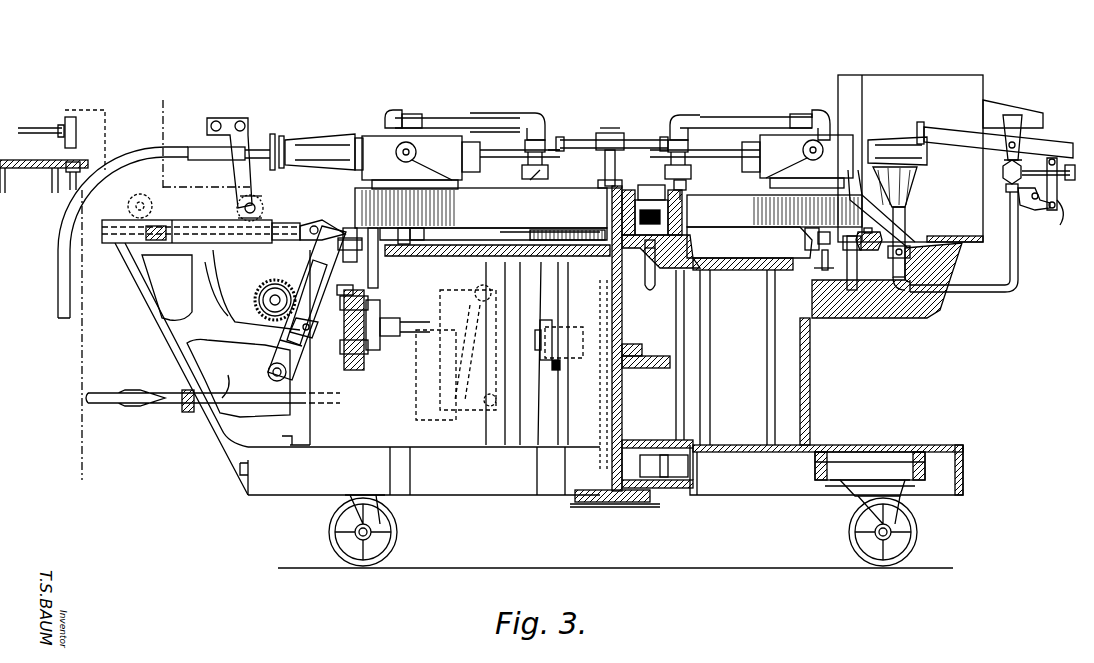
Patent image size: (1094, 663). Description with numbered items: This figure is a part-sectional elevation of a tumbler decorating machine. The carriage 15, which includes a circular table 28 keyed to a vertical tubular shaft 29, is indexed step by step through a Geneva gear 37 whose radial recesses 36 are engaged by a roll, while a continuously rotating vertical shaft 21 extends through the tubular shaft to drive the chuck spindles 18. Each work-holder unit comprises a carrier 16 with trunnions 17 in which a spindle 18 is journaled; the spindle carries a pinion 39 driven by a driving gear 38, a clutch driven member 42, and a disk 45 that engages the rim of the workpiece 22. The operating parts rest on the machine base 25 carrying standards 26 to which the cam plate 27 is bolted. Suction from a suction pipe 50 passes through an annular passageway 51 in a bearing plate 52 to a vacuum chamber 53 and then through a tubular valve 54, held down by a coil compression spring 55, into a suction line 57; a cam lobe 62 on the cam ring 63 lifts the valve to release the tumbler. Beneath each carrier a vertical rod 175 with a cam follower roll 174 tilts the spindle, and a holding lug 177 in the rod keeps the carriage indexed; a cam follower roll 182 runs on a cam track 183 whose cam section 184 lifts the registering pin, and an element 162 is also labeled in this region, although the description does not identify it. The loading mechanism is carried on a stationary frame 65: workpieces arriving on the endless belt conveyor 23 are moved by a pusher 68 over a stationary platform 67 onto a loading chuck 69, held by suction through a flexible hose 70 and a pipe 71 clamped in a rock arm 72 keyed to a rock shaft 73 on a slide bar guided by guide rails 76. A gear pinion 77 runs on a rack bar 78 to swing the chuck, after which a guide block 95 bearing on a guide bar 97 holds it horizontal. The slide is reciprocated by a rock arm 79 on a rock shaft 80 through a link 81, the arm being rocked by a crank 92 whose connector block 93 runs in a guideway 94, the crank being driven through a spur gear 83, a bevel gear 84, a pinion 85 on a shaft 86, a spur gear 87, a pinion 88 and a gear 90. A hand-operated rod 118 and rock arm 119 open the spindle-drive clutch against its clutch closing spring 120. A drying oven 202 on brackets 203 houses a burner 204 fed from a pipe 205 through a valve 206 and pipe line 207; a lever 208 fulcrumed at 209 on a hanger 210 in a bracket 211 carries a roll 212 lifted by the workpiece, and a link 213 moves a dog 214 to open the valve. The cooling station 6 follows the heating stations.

The cooling station 6 is at (150, 116).
The carriage 15 is at (352, 195).
The carrier 16 is at (607, 157).
The trunnions 17 is at (416, 152).
The chuck spindle 18 is at (494, 147).
The vertical shaft 21 is at (618, 160).
The workpiece 22 is at (322, 138).
The endless belt conveyor 23 is at (25, 160).
The machine base 25 is at (886, 444).
The standards 26 is at (412, 432).
The cam plate 27 is at (780, 242).
The circular table 28 is at (550, 218).
The vertical tubular shaft 29 is at (624, 306).
The radial recesses 36 is at (686, 440).
The Geneva gear 37 is at (640, 456).
The driving gear 38 is at (640, 140).
The pinion 39 is at (580, 172).
The clutch driven member 42 is at (430, 112).
The disk 45 is at (360, 136).
The suction pipe 50 is at (656, 282).
The annular passageway 51 is at (641, 251).
The bearing plate 52 is at (684, 220).
The vacuum chamber 53 is at (657, 200).
The tubular valve 54 is at (668, 212).
The coil compression spring 55 is at (690, 182).
The suction line 57 is at (508, 112).
The cam lobe 62 is at (548, 232).
The cam ring 63 is at (690, 246).
The frame 65 is at (175, 340).
The stationary platform 67 is at (66, 163).
The pusher 68 is at (63, 123).
The loading chuck 69 is at (280, 134).
The flexible hose 70 is at (58, 305).
The pipe 71 is at (210, 147).
The rock arm 72 is at (240, 184).
The rock shaft 73 is at (258, 205).
The guide rails 76 is at (133, 204).
The gear pinion 77 is at (263, 188).
The rack bar 78 is at (160, 226).
The rock arm 79 is at (312, 268).
The rock shaft 80 is at (268, 372).
The link 81 is at (320, 222).
The spur gear 83 is at (660, 356).
The bevel gear 84 is at (640, 344).
The pinion 85 is at (572, 328).
The shaft 86 is at (395, 342).
The spur gear 87 is at (350, 370).
The pinion 88 is at (350, 282).
The gear 90 is at (273, 285).
The crank 92 is at (262, 290).
The connector block 93 is at (288, 325).
The guideway 94 is at (285, 348).
The guide block 95 is at (240, 212).
The guide bar 97 is at (200, 222).
The hand-operated rod 118 is at (356, 395).
The rock arm 119 is at (456, 352).
The clutch closing spring 120 is at (225, 383).
The block 162 is at (827, 242).
The cam follower roll 174 is at (350, 228).
The vertical rod 175 is at (392, 184).
The holding lug 177 is at (380, 272).
The cam follower roll 182 is at (420, 234).
The cam track 183 is at (826, 270).
The cam section 184 is at (426, 238).
The drying oven 202 is at (950, 75).
The brackets 203 is at (930, 306).
The burner 204 is at (908, 198).
The pipe 205 is at (1035, 168).
The valve 206 is at (1002, 172).
The pipe line 207 is at (1010, 258).
The lever 208 is at (960, 140).
The fulcrum 209 is at (1018, 146).
The hanger 210 is at (1018, 118).
The bracket 211 is at (1010, 94).
The roll 212 is at (930, 114).
The link 213 is at (1053, 221).
The dog 214 is at (1038, 204).